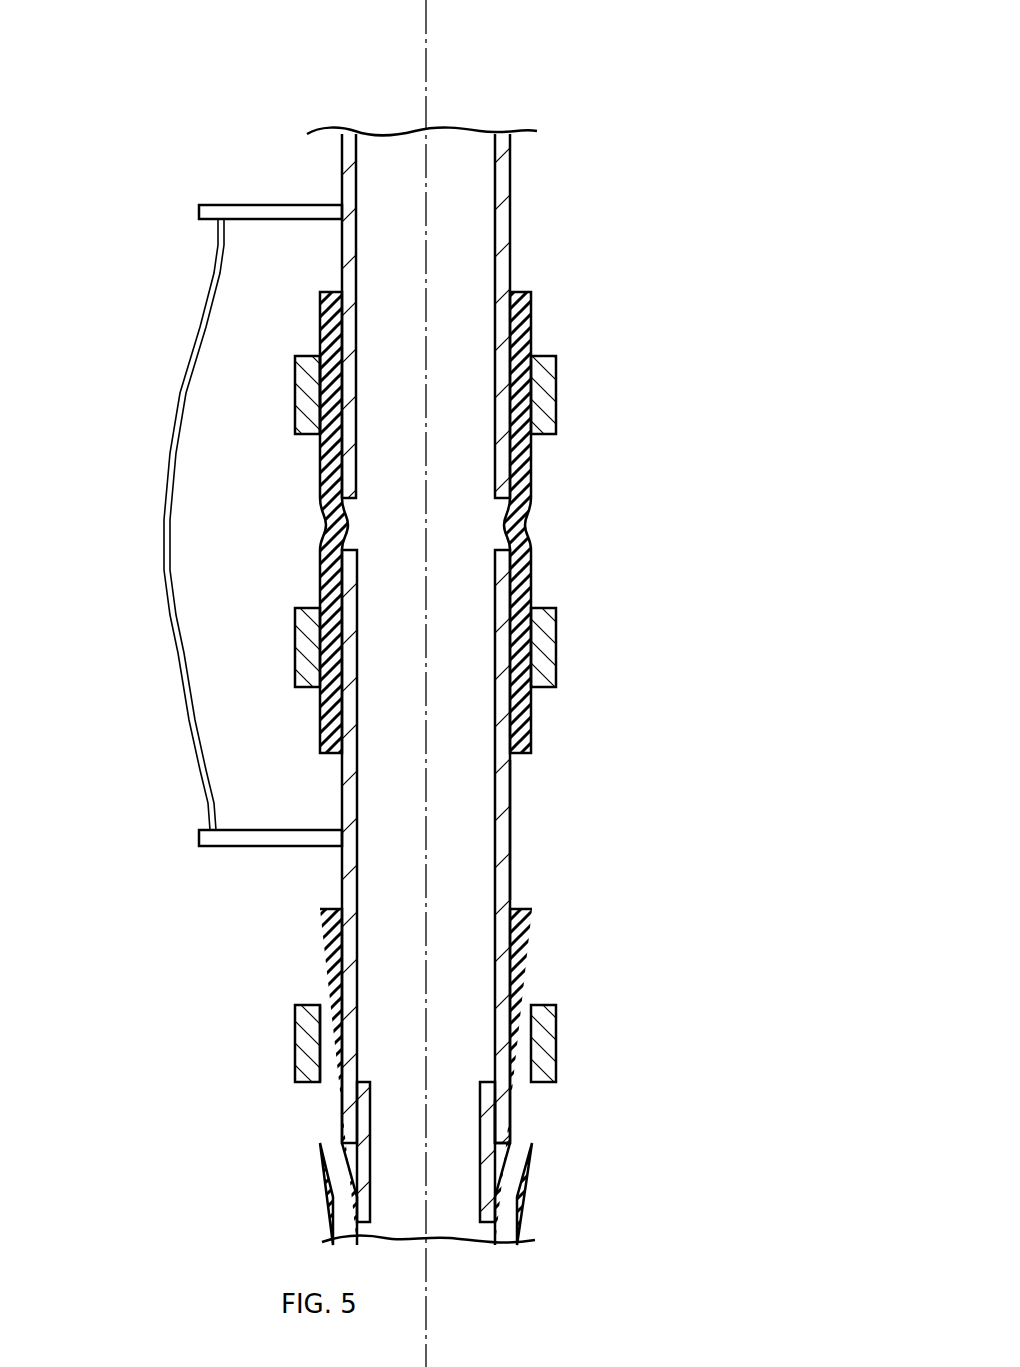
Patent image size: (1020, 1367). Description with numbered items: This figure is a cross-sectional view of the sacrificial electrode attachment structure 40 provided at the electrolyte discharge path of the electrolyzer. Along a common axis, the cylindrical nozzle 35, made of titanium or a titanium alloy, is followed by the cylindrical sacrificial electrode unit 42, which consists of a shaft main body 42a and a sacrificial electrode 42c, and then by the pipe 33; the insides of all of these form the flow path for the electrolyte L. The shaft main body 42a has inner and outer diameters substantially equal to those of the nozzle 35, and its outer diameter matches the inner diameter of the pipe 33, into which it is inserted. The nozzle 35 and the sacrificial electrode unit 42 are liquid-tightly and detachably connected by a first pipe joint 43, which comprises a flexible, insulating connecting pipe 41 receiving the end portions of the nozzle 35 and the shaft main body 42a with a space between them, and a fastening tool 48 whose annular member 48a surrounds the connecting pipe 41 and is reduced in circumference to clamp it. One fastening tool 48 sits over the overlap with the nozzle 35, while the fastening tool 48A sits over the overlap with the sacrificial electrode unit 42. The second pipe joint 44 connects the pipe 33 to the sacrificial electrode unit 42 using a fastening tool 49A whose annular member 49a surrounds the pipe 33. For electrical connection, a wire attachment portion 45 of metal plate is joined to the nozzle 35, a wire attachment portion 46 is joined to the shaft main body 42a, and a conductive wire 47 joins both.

The sacrificial electrode attachment structure 40 is at (648, 79).
The electrolyte L is at (460, 170).
The nozzle 35 is at (510, 221).
The connecting pipe 41 is at (530, 318).
The fastening tool 48 is at (556, 392).
The annular member 48a is at (295, 395).
The fastening tool 48A is at (556, 648).
The first pipe joint 43 is at (517, 522).
The sacrificial electrode unit 42 is at (510, 812).
The shaft main body 42a is at (510, 848).
The sacrificial electrode 42c is at (490, 1152).
The pipe 33 is at (515, 1197).
The second pipe joint 44 is at (486, 1077).
The fastening tool 49A is at (556, 1030).
The annular member 49a is at (295, 1030).
The wire attachment portion 45 is at (240, 205).
The wire attachment portion 46 is at (262, 828).
The wire 47 is at (176, 653).